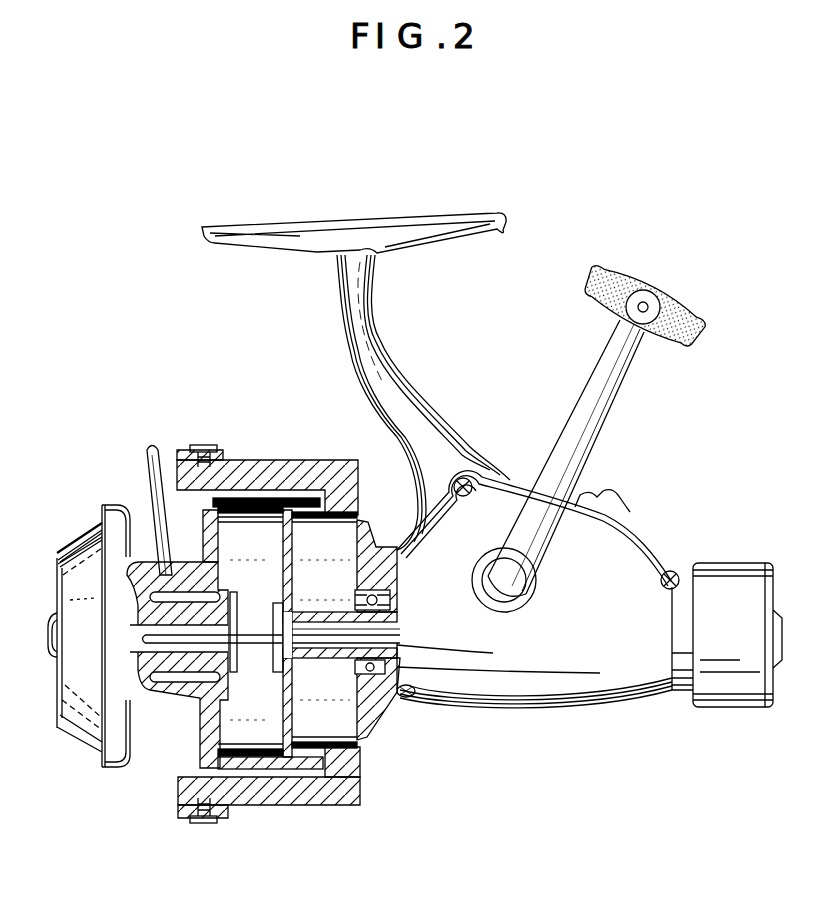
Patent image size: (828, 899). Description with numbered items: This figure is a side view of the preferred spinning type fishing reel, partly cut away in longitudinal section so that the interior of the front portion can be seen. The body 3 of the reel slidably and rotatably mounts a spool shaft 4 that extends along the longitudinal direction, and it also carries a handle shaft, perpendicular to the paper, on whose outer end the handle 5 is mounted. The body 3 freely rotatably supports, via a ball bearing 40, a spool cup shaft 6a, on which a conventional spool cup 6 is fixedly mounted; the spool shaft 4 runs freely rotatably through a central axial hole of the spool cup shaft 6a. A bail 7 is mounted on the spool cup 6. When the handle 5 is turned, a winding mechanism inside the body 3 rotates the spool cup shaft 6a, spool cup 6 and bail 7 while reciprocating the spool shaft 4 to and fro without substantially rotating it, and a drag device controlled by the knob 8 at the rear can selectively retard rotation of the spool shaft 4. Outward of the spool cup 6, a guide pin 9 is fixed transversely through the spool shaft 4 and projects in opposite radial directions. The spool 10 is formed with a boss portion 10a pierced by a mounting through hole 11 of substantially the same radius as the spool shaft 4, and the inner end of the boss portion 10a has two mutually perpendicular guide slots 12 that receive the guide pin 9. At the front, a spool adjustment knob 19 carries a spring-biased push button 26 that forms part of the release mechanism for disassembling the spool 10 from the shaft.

The body 3 is at (645, 570).
The spool shaft 4 is at (304, 649).
The handle 5 is at (630, 283).
The spool cup 6 is at (296, 465).
The spool cup shaft 6a is at (332, 652).
The bail 7 is at (148, 470).
The knob 8 is at (734, 580).
The guide pin 9 is at (248, 607).
The spool 10 is at (163, 688).
The boss portion 10a is at (192, 604).
The mounting through hole 11 is at (140, 645).
The guide slots 12 is at (230, 680).
The knob 19 is at (74, 543).
The push button 26 is at (73, 662).
The ball bearing 40 is at (356, 600).